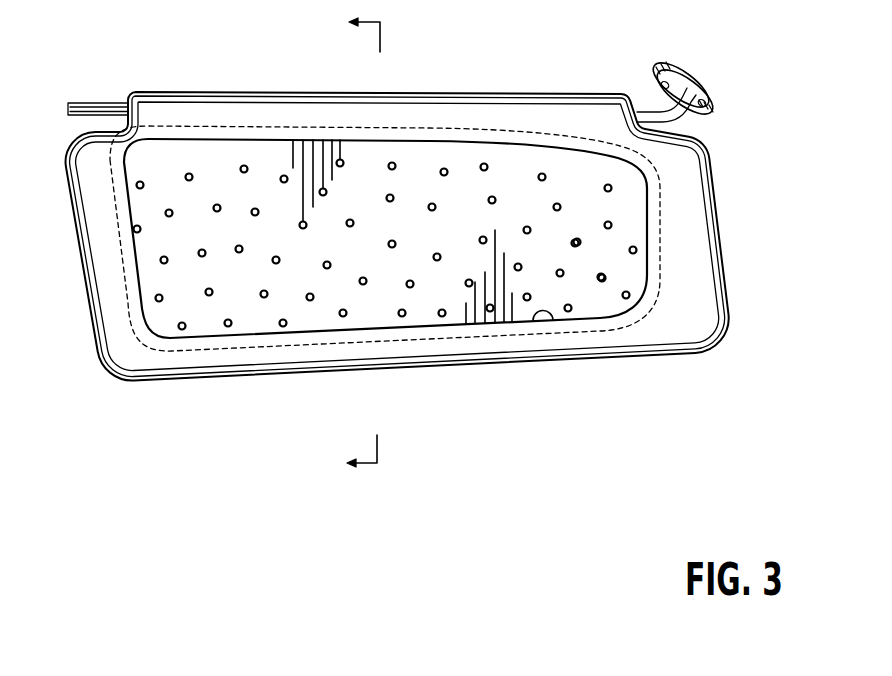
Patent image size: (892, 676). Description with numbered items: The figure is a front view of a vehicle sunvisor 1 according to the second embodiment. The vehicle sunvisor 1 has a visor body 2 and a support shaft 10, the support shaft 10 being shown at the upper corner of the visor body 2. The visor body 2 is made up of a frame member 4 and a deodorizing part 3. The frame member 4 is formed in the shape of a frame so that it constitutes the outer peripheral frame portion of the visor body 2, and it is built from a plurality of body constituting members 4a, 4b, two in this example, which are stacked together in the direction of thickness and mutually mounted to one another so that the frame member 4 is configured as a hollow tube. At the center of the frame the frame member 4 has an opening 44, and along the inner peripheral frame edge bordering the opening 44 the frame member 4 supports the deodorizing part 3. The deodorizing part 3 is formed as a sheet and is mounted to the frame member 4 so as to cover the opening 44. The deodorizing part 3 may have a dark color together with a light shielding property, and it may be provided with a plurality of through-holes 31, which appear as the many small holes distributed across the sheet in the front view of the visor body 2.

The vehicle sunvisor 1 is at (237, 69).
The visor body 2 is at (167, 449).
The deodorizing part 3 is at (315, 313).
The through-holes 31 is at (435, 319).
The frame member 4 is at (710, 245).
The body constituting member 4a is at (188, 369).
The body constituting member 4b is at (231, 381).
The support shaft 10 is at (680, 118).
The opening 44 is at (550, 319).